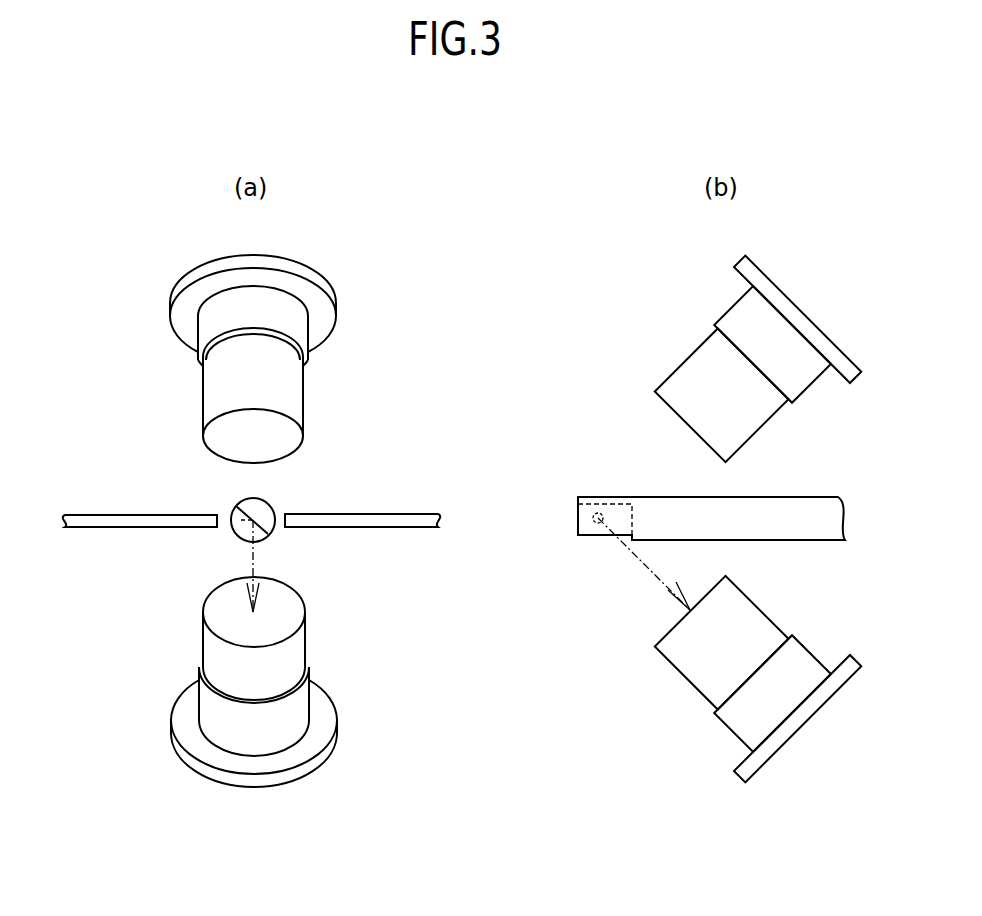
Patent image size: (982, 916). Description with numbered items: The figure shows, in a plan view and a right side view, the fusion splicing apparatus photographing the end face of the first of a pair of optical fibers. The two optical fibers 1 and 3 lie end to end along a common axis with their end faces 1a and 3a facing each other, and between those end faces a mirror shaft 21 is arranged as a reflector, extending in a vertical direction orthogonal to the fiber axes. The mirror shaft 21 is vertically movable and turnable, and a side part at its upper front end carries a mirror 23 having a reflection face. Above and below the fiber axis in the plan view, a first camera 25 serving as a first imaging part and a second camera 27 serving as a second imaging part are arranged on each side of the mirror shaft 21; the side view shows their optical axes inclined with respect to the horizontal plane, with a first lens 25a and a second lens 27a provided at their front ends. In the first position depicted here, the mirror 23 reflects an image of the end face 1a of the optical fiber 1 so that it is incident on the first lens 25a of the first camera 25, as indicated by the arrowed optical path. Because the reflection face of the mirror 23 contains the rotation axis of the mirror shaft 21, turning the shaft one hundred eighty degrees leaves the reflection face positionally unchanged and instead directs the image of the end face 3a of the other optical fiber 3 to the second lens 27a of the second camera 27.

The optical fiber 1 is at (102, 513).
The end face 1a is at (228, 511).
The optical fiber 3 is at (400, 513).
The end face 3a is at (284, 510).
The mirror shaft 21 is at (243, 537).
The mirror 23 is at (263, 540).
The first camera 25 is at (193, 708).
The first lens 25a is at (203, 645).
The second camera 27 is at (193, 377).
The second lens 27a is at (203, 405).